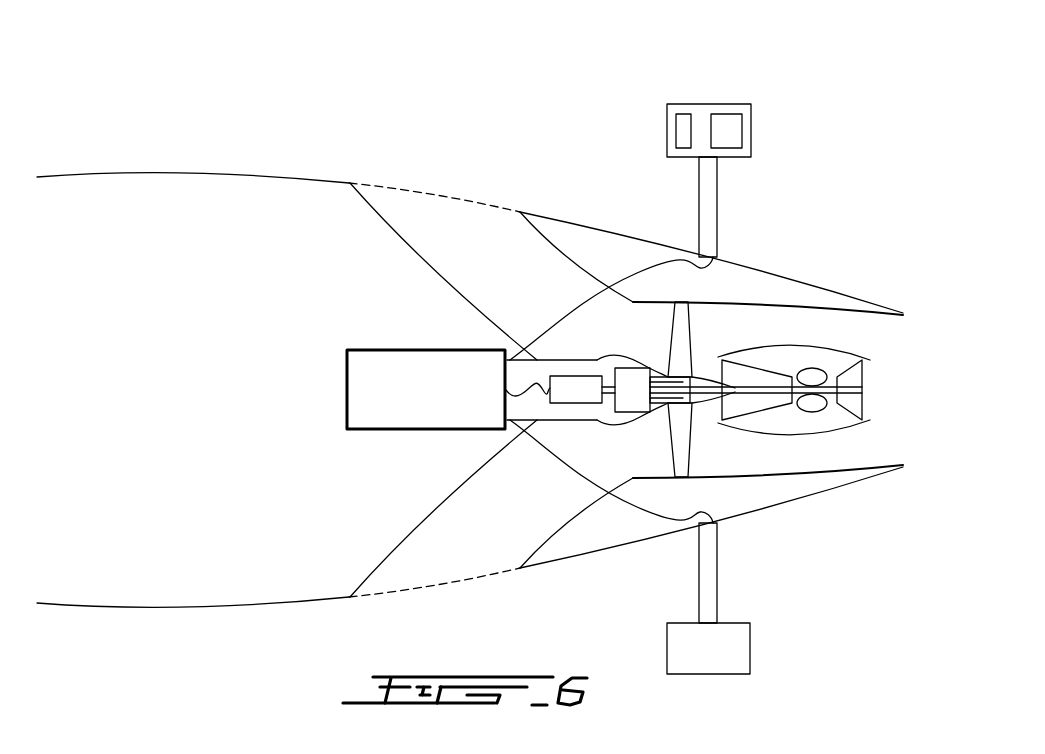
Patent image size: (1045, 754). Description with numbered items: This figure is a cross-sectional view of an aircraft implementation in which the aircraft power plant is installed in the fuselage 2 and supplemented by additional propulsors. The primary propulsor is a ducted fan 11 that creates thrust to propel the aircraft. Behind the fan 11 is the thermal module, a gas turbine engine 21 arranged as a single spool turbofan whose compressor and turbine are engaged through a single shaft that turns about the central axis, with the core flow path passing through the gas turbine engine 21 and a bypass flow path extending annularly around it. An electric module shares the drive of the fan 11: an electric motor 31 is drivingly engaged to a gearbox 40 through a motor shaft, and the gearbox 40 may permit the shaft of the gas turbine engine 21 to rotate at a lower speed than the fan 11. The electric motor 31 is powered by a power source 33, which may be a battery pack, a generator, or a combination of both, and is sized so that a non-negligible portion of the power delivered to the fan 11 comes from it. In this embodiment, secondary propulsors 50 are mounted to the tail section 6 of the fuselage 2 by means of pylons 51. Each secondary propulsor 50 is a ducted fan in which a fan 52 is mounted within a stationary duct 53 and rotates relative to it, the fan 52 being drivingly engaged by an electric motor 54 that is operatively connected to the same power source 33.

The fuselage 2 is at (249, 143).
The tail section 6 is at (843, 213).
The fan 11 is at (682, 327).
The gas turbine engine 21 is at (841, 307).
The electric motor 31 is at (574, 392).
The power source 33 is at (387, 430).
The gearbox 40 is at (633, 393).
The secondary propulsor 50 is at (704, 136).
The pylon 51 is at (707, 195).
The fan 52 is at (676, 130).
The duct 53 is at (712, 104).
The electric motor 54 is at (733, 148).